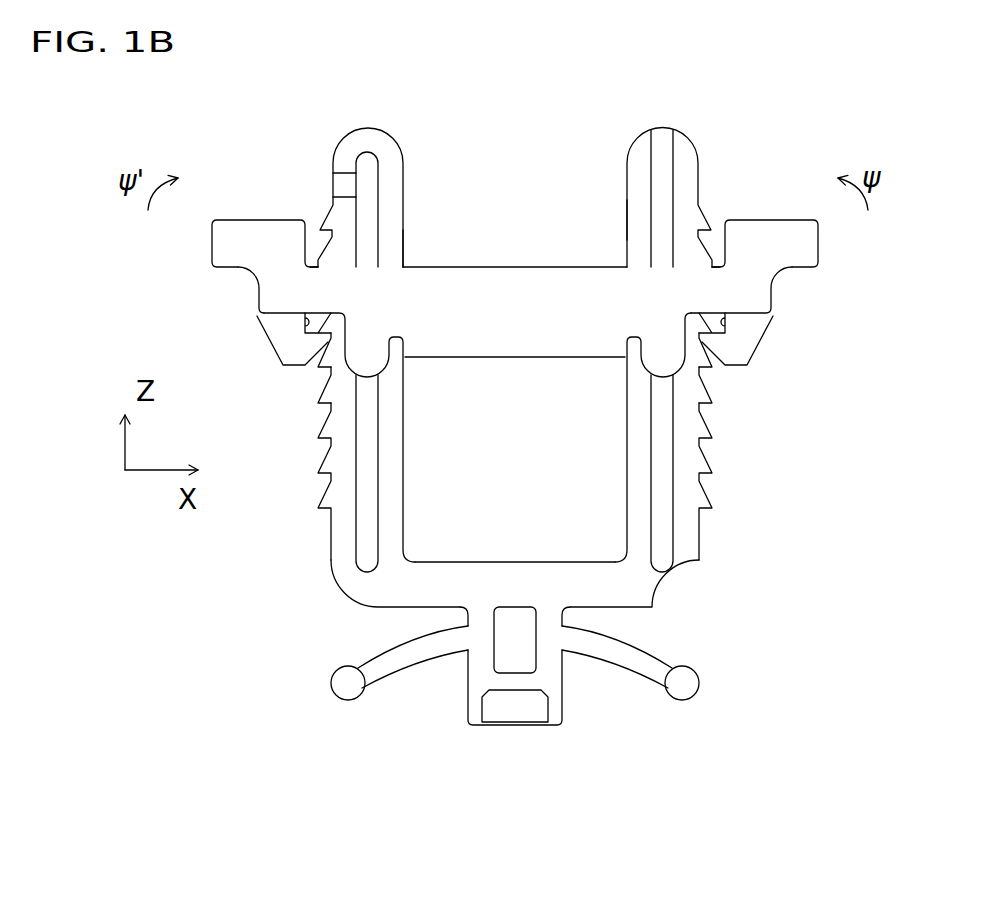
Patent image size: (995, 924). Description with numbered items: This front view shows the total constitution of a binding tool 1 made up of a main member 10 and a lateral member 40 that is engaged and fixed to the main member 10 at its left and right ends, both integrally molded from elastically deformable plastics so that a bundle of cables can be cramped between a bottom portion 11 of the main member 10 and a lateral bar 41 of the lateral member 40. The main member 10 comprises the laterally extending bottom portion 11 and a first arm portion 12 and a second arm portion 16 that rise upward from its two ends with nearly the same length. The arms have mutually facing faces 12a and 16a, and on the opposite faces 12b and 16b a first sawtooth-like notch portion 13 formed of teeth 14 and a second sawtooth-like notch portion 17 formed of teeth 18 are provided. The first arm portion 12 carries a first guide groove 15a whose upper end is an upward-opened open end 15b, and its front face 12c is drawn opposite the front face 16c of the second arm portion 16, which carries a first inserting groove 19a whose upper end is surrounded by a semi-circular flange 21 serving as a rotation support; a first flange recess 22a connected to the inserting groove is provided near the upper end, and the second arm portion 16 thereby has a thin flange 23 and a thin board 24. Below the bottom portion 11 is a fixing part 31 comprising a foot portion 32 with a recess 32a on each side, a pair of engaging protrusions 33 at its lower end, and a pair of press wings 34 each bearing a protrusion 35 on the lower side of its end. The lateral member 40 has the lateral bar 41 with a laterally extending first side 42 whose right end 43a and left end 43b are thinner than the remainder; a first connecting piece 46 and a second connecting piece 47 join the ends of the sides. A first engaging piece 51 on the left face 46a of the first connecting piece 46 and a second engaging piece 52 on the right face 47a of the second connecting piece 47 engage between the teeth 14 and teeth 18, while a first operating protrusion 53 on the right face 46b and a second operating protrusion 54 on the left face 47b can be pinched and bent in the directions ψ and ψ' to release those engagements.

The binding tool 1 is at (768, 115).
The main member 10 is at (624, 133).
The bottom portion 11 is at (518, 566).
The first arm portion 12 is at (642, 162).
The face of first arm portion 12a is at (627, 214).
The face of first arm portion 12b is at (700, 548).
The arm slit 12c is at (640, 472).
The first sawtooth-like notch portion 13 is at (714, 440).
The teeth 14 is at (714, 470).
The first guide groove 15a is at (657, 192).
The open end 15b is at (662, 132).
The second arm portion 16 is at (386, 163).
The face of second arm portion 16a is at (405, 252).
The face of second arm portion 16b is at (330, 558).
The front face of second arm portion 16c is at (392, 472).
The second sawtooth-like notch portion 17 is at (315, 405).
The teeth 18 is at (318, 442).
The first inserting groove 19a is at (432, 203).
The semi-circular flange 21 is at (366, 131).
The first flange recess 22a is at (310, 136).
The thin flange 23 is at (334, 186).
The thin board 24 is at (368, 214).
The fixing part 31 is at (557, 696).
The foot portion 32 is at (560, 680).
The recess 32a is at (519, 626).
The engaging protrusions 33 is at (515, 710).
The press wings 34 is at (400, 650).
The protrusion 35 is at (348, 700).
The lateral member 40 is at (765, 218).
The lateral bar 41 is at (485, 262).
The first side 42 is at (510, 350).
The right end of first side 43a is at (719, 278).
The left end of first side 43b is at (313, 278).
The first connecting piece 46 is at (762, 324).
The left face of first connecting piece 46a is at (723, 330).
The right face of first connecting piece 46b is at (773, 292).
The second connecting piece 47 is at (304, 332).
The right face of second connecting piece 47a is at (306, 334).
The left face of second connecting piece 47b is at (257, 295).
The first engaging piece 51 is at (714, 362).
The second engaging piece 52 is at (313, 366).
The first operating protrusion 53 is at (802, 230).
The second operating protrusion 54 is at (238, 228).